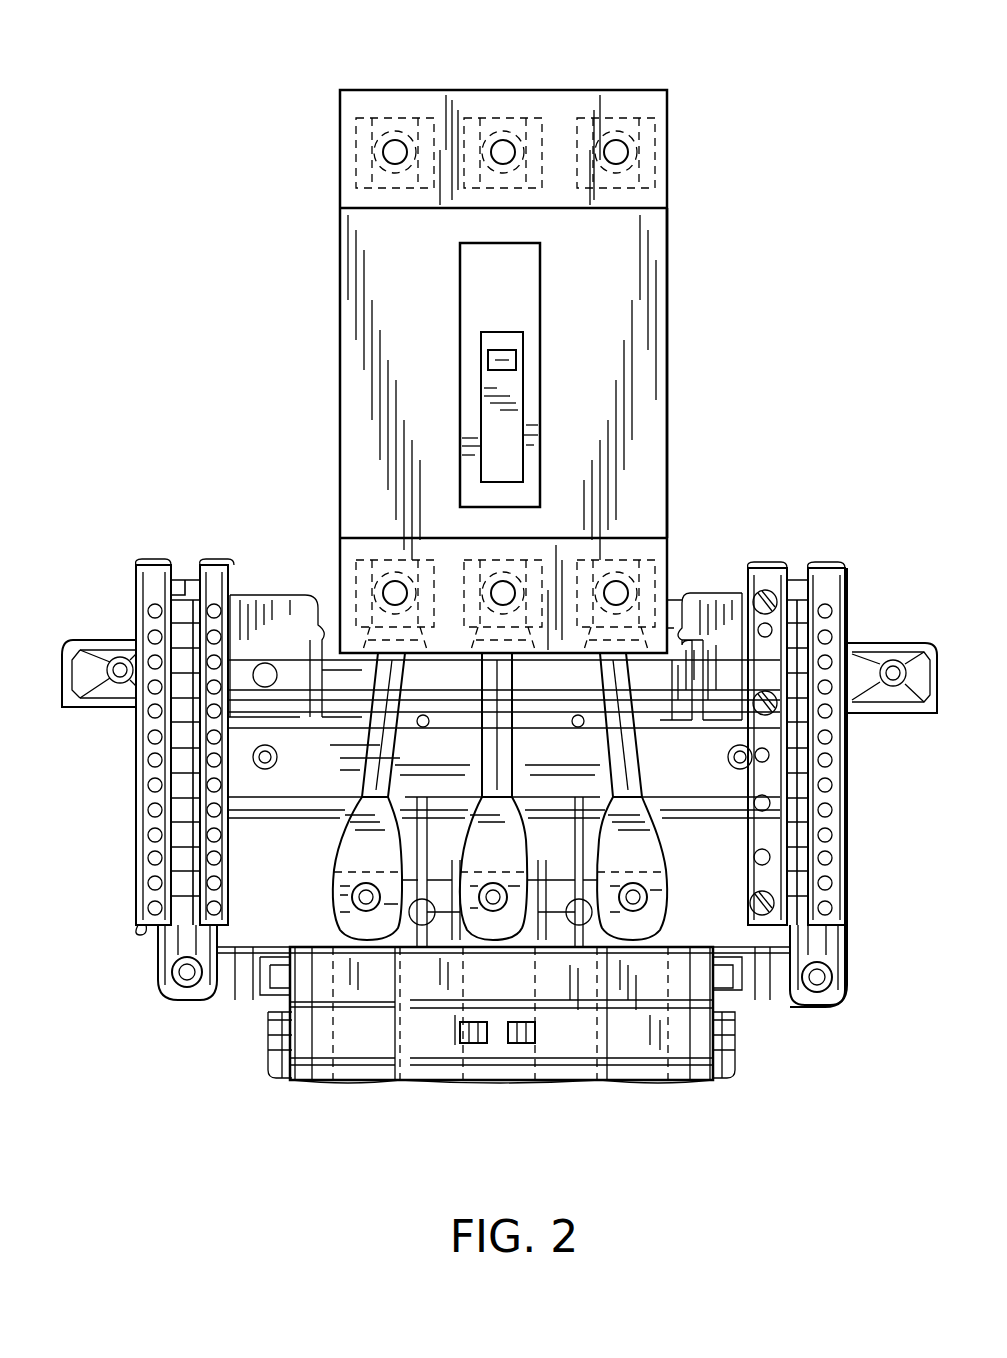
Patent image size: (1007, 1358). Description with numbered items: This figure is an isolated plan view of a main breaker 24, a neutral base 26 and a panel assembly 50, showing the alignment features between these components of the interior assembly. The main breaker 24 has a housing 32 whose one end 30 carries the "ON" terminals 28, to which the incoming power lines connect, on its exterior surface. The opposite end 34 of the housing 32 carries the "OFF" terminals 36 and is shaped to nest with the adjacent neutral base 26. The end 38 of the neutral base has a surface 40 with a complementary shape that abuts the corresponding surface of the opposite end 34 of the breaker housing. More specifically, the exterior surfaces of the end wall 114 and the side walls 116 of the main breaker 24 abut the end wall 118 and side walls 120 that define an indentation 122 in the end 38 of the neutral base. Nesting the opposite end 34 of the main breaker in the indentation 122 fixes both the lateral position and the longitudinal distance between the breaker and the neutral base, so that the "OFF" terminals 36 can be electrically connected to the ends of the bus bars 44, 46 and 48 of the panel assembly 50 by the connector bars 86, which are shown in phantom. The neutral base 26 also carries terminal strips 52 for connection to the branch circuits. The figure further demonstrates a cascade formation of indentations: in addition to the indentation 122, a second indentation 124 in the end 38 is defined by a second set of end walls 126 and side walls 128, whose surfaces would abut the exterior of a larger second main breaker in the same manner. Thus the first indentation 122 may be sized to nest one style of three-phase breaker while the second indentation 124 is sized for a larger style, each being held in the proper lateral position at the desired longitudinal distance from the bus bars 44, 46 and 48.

The main breaker 24 is at (652, 257).
The neutral base 26 is at (845, 786).
The "ON" terminals 28 is at (643, 146).
The end of the housing 30 is at (592, 88).
The housing 32 is at (670, 300).
The opposite end of the housing 34 is at (355, 574).
The "OFF" terminals 36 is at (677, 585).
The end of the neutral base 38 is at (645, 690).
The surface 40 is at (383, 668).
The bus bar 44 is at (362, 1052).
The bus bar 46 is at (632, 1055).
The bus bar 48 is at (500, 1045).
The panel assembly 50 is at (760, 1010).
The terminal strips 52 is at (145, 858).
The connector bars 86 is at (370, 860).
The end wall 114 is at (548, 646).
The side walls 116 is at (338, 316).
The end wall 118 is at (143, 570).
The side walls 120 is at (365, 678).
The indentation 122 is at (448, 645).
The second indentation 124 is at (683, 600).
The second set of end walls 126 is at (680, 652).
The second set of side walls 128 is at (757, 568).